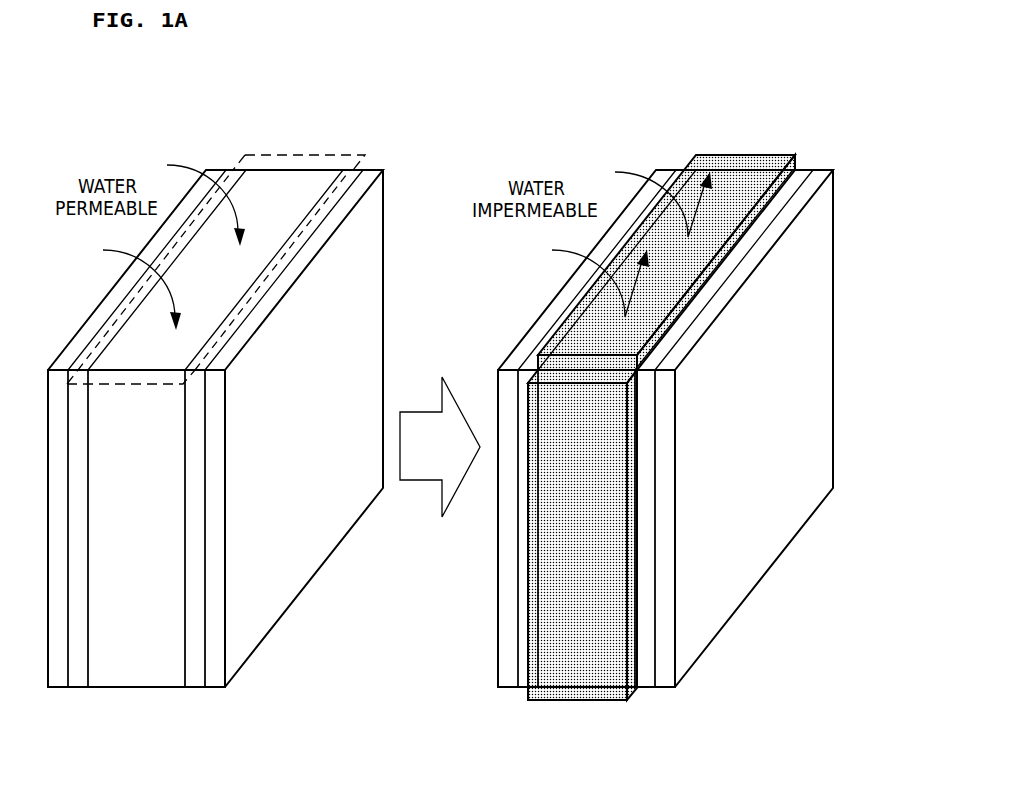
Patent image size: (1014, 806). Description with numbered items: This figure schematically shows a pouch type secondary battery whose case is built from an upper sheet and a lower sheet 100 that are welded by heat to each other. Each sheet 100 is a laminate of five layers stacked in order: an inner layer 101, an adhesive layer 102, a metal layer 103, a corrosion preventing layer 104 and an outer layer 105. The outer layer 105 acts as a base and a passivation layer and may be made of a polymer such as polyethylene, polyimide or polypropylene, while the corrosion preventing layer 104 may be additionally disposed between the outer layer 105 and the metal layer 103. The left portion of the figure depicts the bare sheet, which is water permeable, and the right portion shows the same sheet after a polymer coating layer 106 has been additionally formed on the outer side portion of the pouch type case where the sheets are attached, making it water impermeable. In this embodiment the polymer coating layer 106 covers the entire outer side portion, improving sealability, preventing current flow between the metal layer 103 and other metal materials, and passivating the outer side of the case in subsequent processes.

The upper sheet or lower sheet of the pouch type secondary battery 100 is at (378, 168).
The inner layer 101 is at (218, 682).
The adhesive layer 102 is at (193, 682).
The metal layer 103 is at (138, 682).
The corrosion preventing layer 104 is at (79, 682).
The outer layer 105 is at (59, 682).
The polymer coating layer 106 is at (748, 157).